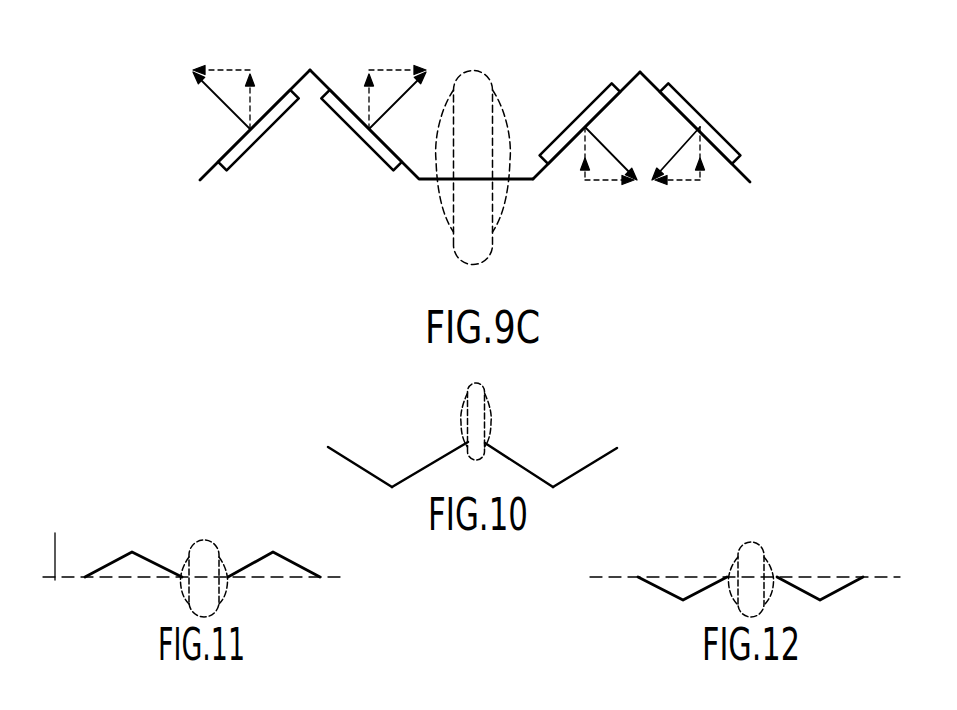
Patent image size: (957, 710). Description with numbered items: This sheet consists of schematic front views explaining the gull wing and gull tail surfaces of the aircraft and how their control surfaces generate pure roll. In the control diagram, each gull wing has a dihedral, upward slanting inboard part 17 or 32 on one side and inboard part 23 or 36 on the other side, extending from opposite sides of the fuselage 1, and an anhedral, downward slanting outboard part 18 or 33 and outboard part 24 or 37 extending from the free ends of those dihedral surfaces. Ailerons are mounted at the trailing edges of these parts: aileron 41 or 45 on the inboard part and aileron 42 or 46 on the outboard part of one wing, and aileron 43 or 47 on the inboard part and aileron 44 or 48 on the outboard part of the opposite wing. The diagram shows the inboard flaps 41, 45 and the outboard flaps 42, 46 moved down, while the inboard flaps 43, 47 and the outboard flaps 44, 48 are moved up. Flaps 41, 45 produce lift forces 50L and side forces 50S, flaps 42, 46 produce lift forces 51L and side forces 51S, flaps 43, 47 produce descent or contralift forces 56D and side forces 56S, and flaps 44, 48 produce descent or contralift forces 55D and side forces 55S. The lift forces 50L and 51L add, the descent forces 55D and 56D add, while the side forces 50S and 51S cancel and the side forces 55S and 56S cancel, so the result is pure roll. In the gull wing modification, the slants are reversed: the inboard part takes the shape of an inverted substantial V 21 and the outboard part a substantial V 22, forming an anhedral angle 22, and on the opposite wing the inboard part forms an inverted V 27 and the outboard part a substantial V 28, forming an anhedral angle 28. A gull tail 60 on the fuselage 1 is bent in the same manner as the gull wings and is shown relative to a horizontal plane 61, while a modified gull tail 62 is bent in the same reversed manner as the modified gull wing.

In FIG. 9C, the fuselage 1 is at (478, 68).
In FIG. 10, the fuselage 1 is at (480, 387).
In FIG. 11, the fuselage 1 is at (193, 547).
In FIG. 12, the fuselage 1 is at (753, 547).
In FIG. 9C, the outboard part 18 is at (198, 125).
In FIG. 9C, the outboard part 33 is at (208, 168).
In FIG. 9C, the inboard part 17 is at (406, 158).
In FIG. 9C, the inboard part 32 is at (407, 170).
In FIG. 9C, the inboard part 23 is at (580, 171).
In FIG. 9C, the inboard part 36 is at (542, 182).
In FIG. 9C, the outboard part 24 is at (746, 127).
In FIG. 9C, the outboard part 37 is at (742, 170).
In FIG. 9C, the aileron 41 is at (341, 137).
In FIG. 9C, the aileron 45 is at (370, 153).
In FIG. 9C, the aileron 42 is at (226, 160).
In FIG. 9C, the aileron 46 is at (257, 142).
In FIG. 9C, the aileron 43 is at (586, 94).
In FIG. 9C, the aileron 47 is at (592, 100).
In FIG. 9C, the aileron 44 is at (726, 113).
In FIG. 9C, the aileron 48 is at (678, 92).
In FIG. 9C, the lift forces 50L is at (363, 112).
In FIG. 9C, the side forces 50S is at (388, 68).
In FIG. 9C, the lift forces 51L is at (262, 108).
In FIG. 9C, the side forces 51S is at (243, 68).
In FIG. 9C, the descent or contralift forces 55D is at (703, 163).
In FIG. 9C, the side forces 55S is at (677, 185).
In FIG. 9C, the descent or contralift forces 56D is at (585, 147).
In FIG. 9C, the side forces 56S is at (607, 183).
In FIG. 10, the inverted substantial V 21 is at (457, 487).
In FIG. 10, the substantial V 22 is at (408, 469).
In FIG. 10, the inverted V 27 is at (517, 487).
In FIG. 10, the substantial V 28 is at (570, 470).
In FIG. 11, the gull tail 60 is at (283, 562).
In FIG. 11, the horizontal plane 61 is at (192, 545).
In FIG. 12, the horizontal plane 61 is at (615, 578).
In FIG. 12, the modified gull tail 62 is at (828, 595).